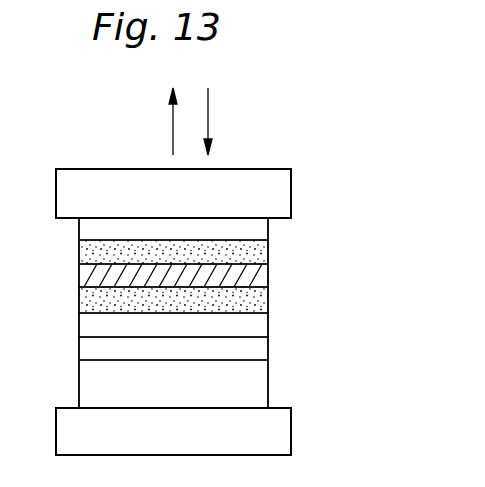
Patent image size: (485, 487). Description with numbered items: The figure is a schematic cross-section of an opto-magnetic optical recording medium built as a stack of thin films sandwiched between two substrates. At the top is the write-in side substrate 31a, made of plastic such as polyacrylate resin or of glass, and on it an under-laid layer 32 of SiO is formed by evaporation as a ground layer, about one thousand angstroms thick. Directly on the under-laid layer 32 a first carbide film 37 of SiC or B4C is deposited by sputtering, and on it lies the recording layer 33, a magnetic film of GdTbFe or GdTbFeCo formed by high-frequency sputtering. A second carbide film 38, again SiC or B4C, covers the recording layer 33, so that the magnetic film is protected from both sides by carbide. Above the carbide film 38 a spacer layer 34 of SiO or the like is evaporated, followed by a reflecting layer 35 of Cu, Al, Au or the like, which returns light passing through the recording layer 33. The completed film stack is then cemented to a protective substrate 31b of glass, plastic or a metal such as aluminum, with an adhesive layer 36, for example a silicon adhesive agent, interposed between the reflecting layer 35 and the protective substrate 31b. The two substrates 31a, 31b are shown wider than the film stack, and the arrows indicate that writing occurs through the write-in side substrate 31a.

The write-in side substrate 31a is at (283, 188).
The protective substrate 31b is at (280, 430).
The under-laid layer 32 is at (262, 231).
The recording layer 33 is at (262, 278).
The spacer layer 34 is at (262, 326).
The reflecting layer 35 is at (262, 350).
The adhesive layer 36 is at (262, 382).
The carbide film 37 is at (258, 252).
The carbide film 38 is at (258, 300).